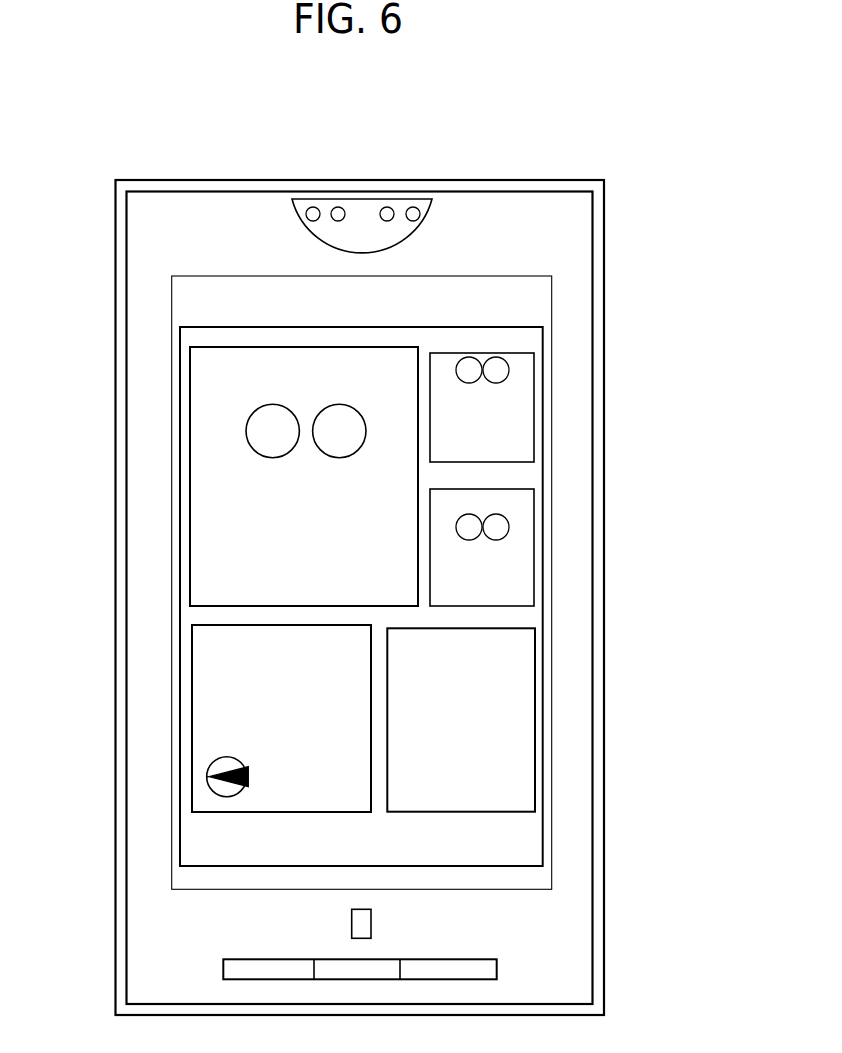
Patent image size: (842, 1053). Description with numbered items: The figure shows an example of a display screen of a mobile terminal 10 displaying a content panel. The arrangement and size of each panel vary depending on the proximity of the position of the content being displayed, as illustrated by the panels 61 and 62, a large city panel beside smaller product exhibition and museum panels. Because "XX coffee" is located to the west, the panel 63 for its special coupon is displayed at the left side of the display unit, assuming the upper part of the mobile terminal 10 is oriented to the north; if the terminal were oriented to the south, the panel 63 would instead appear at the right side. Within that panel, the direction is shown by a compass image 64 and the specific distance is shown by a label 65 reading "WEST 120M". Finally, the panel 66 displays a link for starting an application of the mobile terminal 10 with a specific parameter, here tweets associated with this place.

The mobile terminal 10 is at (604, 269).
The panel 61 is at (204, 419).
The panel 62 is at (523, 383).
The panel 63 is at (200, 650).
The compass image 64 is at (212, 767).
The label 65 is at (290, 789).
The panel 66 is at (523, 666).